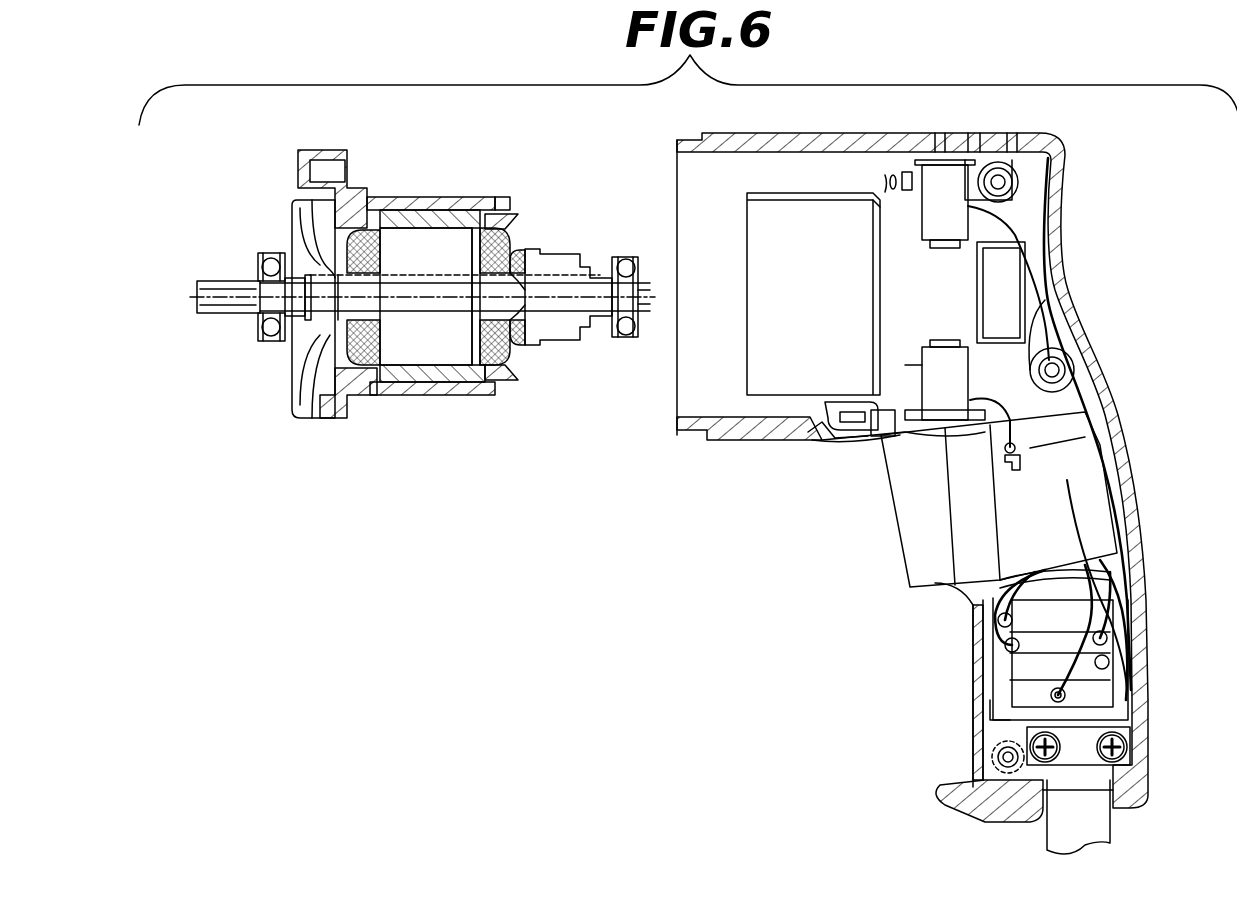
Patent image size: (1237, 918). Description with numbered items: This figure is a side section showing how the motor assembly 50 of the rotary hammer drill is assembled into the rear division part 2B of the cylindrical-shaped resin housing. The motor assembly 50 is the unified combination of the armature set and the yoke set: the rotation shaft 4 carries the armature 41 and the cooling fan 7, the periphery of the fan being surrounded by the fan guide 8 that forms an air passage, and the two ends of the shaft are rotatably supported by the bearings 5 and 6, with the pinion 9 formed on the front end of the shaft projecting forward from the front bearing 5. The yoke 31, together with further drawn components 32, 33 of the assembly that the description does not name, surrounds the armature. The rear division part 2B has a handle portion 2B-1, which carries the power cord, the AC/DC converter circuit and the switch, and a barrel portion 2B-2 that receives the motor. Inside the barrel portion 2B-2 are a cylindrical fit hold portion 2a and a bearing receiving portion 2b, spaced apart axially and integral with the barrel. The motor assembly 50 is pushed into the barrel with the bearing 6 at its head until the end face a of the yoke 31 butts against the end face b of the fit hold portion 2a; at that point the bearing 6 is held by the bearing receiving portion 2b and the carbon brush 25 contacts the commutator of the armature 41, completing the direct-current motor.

The rear division part 2B is at (957, 478).
The handle portion 2B-1 is at (1148, 538).
The barrel portion 2B-2 is at (788, 440).
The fit hold portion 2a is at (805, 192).
The bearing receiving portion 2b is at (1018, 251).
The end face of the yoke a is at (520, 192).
The end face of the fit support portion b is at (871, 206).
The rotation shaft 4 is at (553, 285).
The bearing 5 is at (263, 345).
The bearing 6 is at (626, 250).
The cooling fan 7 is at (310, 216).
The fan guide 8 is at (346, 187).
The pinion 9 is at (221, 318).
The carbon brush 25 is at (950, 192).
The yoke 31 is at (440, 397).
The stator insulator 32 is at (415, 199).
The stator end plate 33 is at (520, 382).
The armature 41 is at (403, 363).
The motor assembly 50 is at (462, 285).